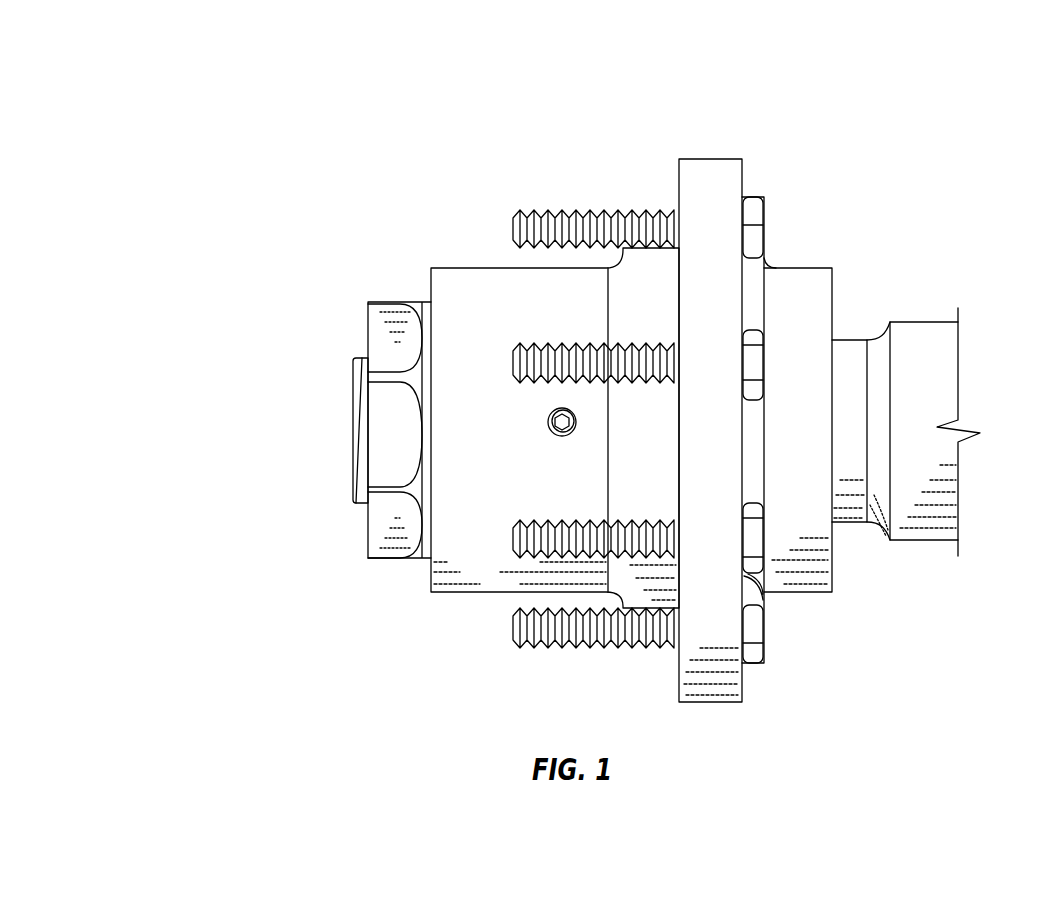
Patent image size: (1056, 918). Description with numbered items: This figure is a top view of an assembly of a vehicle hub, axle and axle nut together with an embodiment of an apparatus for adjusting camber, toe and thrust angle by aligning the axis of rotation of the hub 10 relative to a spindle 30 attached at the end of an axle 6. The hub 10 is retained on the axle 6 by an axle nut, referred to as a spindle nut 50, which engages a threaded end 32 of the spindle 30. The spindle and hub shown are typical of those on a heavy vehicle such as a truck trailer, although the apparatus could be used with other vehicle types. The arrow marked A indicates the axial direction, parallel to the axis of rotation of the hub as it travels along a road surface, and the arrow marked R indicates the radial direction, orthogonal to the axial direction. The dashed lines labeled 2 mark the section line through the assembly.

The hub 10 is at (450, 267).
The threaded end 32 is at (360, 357).
The spindle nut 50 is at (370, 530).
The spindle 30 is at (843, 352).
The axle 6 is at (920, 322).
The section line 2- 2 is at (352, 430).
The axial direction A is at (87, 430).
The radial direction R is at (741, 118).